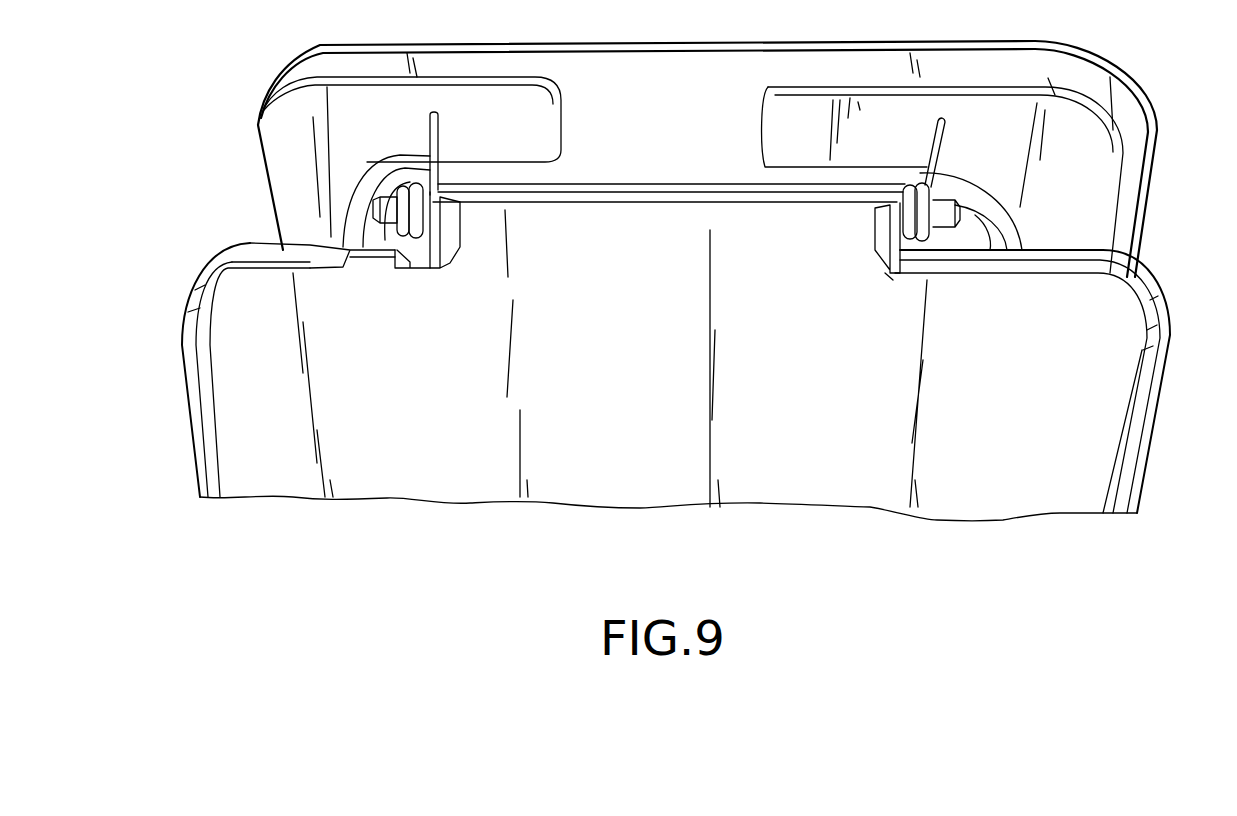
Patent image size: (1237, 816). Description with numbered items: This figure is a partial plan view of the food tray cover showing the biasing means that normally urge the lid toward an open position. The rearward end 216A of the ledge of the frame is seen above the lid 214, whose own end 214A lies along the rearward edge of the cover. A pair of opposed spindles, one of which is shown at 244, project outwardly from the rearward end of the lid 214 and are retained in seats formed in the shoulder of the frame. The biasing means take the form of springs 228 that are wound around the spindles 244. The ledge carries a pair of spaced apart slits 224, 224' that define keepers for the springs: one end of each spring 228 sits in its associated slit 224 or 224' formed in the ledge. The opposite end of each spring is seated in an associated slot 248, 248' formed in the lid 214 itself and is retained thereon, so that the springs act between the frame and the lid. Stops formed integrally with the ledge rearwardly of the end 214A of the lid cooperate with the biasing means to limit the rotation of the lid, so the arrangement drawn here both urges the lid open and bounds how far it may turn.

The rearward end of the ledge 216A is at (1130, 100).
The lid 214 is at (873, 473).
The end of the lid 214A is at (634, 193).
The slit 224 is at (975, 152).
The slit 224' is at (396, 153).
The spindle 244 is at (378, 208).
The spring 228 is at (428, 270).
The slot 248 is at (386, 286).
The slot 248' is at (854, 295).